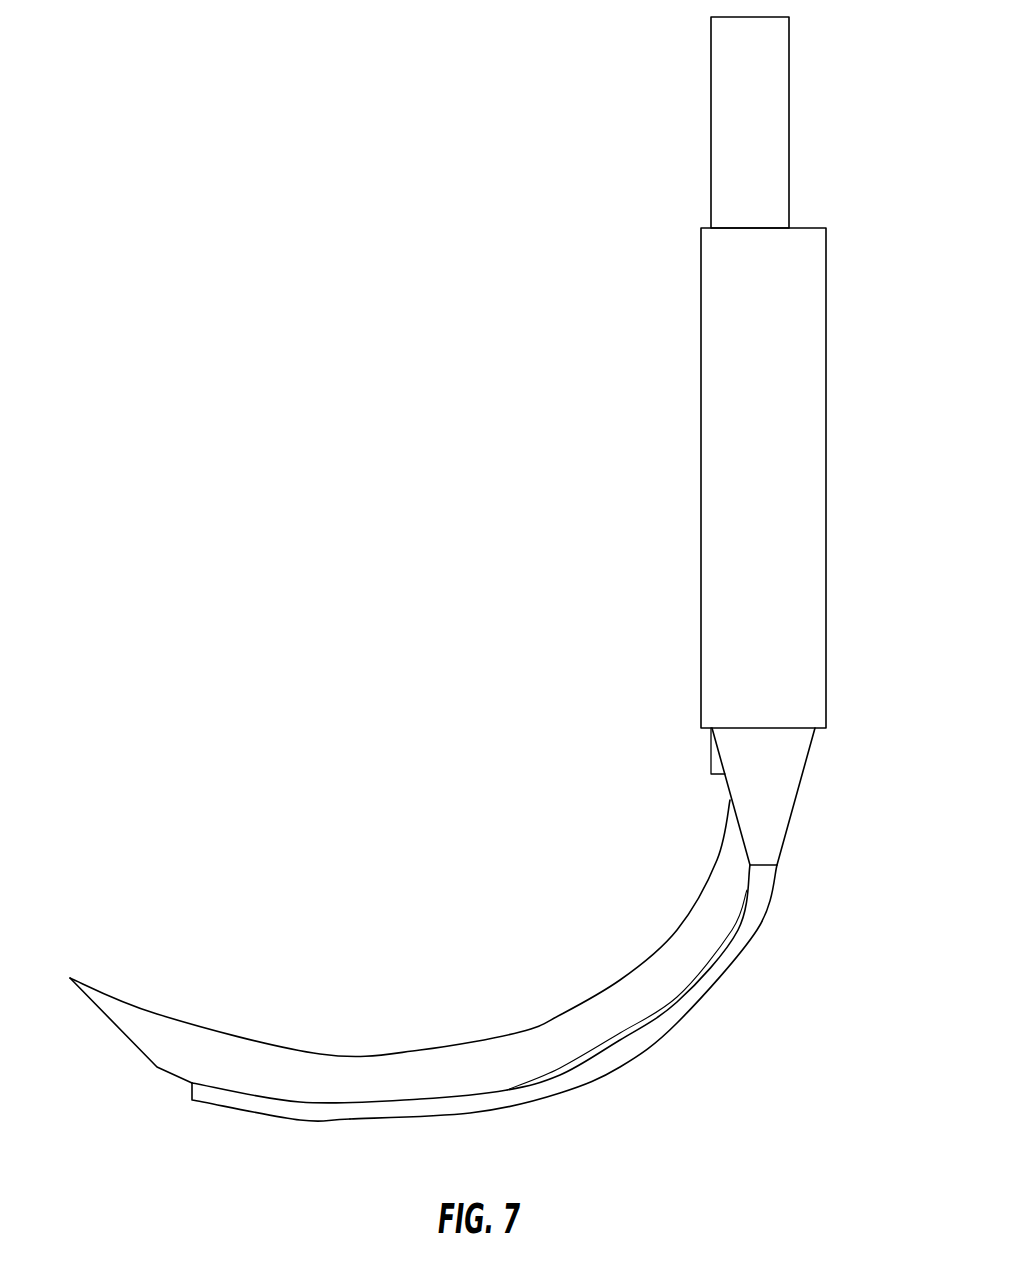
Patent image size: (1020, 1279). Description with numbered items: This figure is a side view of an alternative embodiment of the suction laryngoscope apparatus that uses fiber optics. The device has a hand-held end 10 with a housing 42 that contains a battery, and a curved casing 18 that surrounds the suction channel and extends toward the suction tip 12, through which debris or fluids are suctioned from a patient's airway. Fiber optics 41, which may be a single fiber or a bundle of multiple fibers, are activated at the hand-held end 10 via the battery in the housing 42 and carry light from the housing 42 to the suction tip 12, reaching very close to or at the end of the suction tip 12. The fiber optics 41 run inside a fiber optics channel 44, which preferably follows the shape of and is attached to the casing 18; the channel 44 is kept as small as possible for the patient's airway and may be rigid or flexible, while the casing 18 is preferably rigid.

The hand-held end 10 is at (570, 138).
The suction tip 12 is at (129, 967).
The casing 18 is at (495, 1037).
The fiber optics 41 is at (647, 1030).
The housing 42 is at (827, 390).
The fiber optics channel 44 is at (347, 1123).